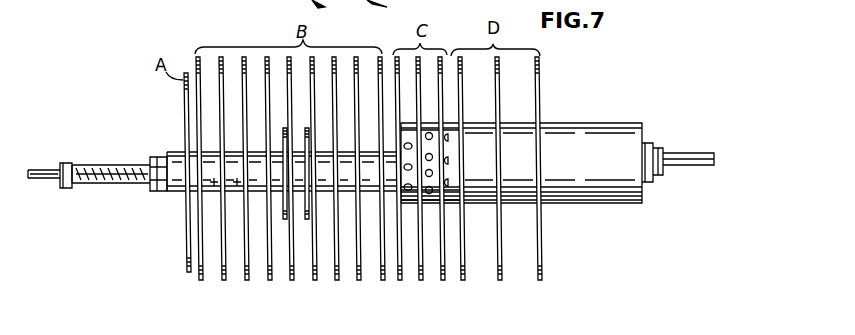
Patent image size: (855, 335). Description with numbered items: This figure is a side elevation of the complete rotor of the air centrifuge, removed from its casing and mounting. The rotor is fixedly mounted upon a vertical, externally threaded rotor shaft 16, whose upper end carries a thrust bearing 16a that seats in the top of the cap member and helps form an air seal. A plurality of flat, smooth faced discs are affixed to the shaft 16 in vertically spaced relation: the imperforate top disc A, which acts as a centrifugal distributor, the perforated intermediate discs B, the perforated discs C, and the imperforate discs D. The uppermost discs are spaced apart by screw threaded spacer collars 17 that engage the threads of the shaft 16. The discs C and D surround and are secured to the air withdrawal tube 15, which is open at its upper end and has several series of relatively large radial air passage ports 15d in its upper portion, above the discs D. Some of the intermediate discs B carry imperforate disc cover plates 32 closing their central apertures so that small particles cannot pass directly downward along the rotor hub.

The air withdrawal tube 15 is at (612, 195).
The radial air passage ports 15d is at (458, 125).
The rotor shaft 16 is at (131, 185).
The thrust bearing 16a is at (66, 162).
The disc spacer collars 17 is at (237, 186).
The disc cover plates 32 is at (308, 222).